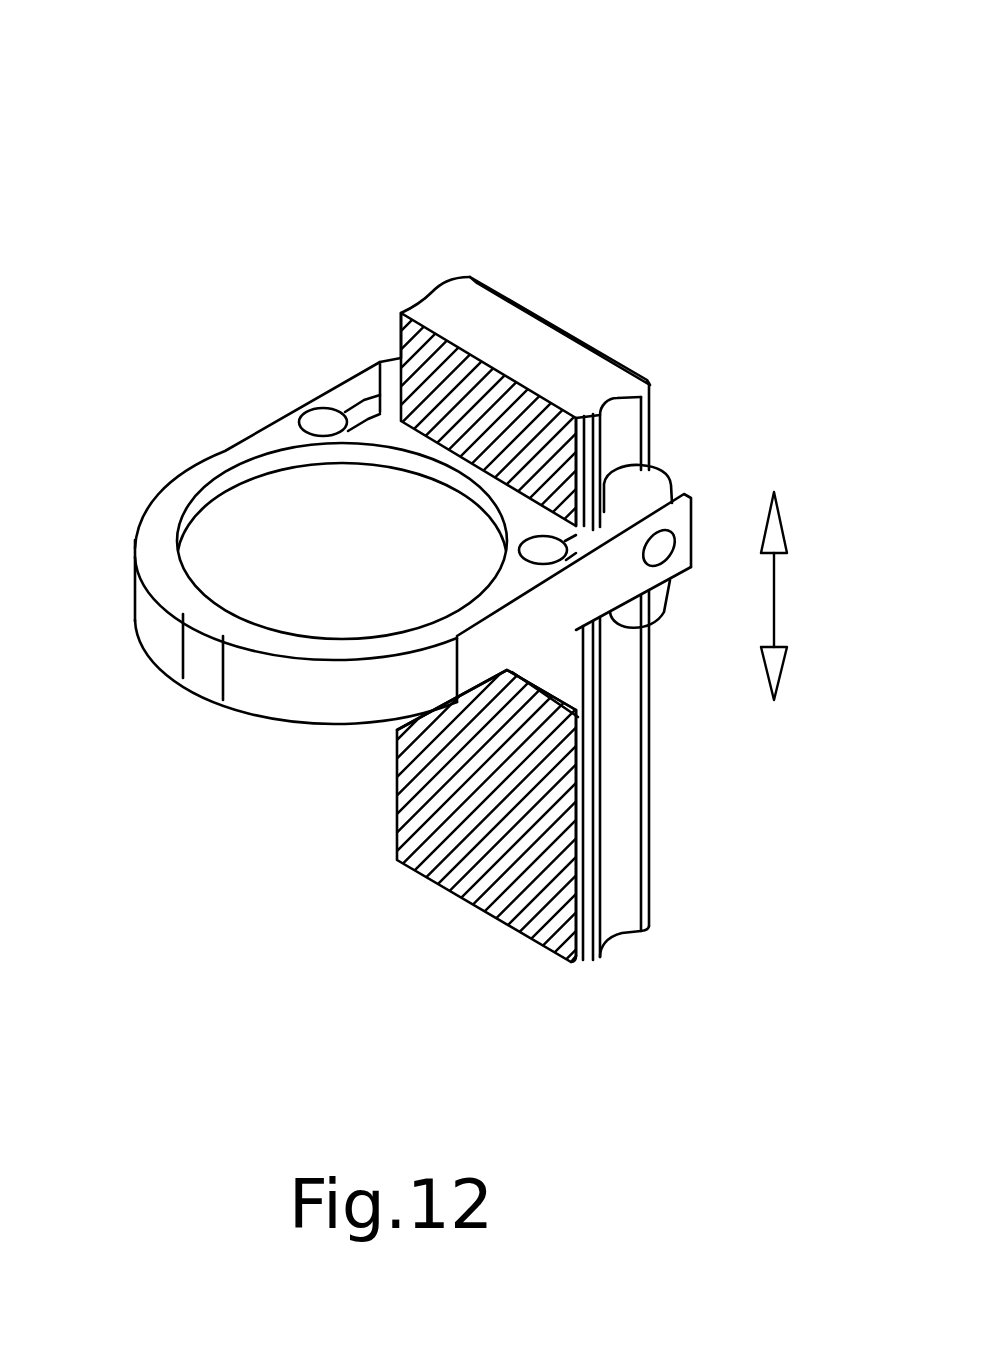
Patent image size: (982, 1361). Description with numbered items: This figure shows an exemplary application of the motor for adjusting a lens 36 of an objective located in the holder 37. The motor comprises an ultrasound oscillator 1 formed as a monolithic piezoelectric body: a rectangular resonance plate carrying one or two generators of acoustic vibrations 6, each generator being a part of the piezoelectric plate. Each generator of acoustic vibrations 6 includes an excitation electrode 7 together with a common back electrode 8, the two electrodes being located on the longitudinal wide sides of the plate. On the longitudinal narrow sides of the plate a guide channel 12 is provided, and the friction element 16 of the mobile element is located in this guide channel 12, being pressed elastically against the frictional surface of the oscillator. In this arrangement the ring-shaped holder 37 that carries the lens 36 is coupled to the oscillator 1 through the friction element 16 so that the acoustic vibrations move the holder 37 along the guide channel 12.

The ultrasound oscillator 1 is at (646, 262).
The generator of acoustic vibrations 6 is at (541, 300).
The excitation electrode 7 is at (460, 403).
The common back electrode 8 is at (628, 350).
The guide channel 12 is at (441, 255).
The friction element 16 is at (336, 344).
The lens 36 is at (308, 532).
The holder 37 is at (270, 732).